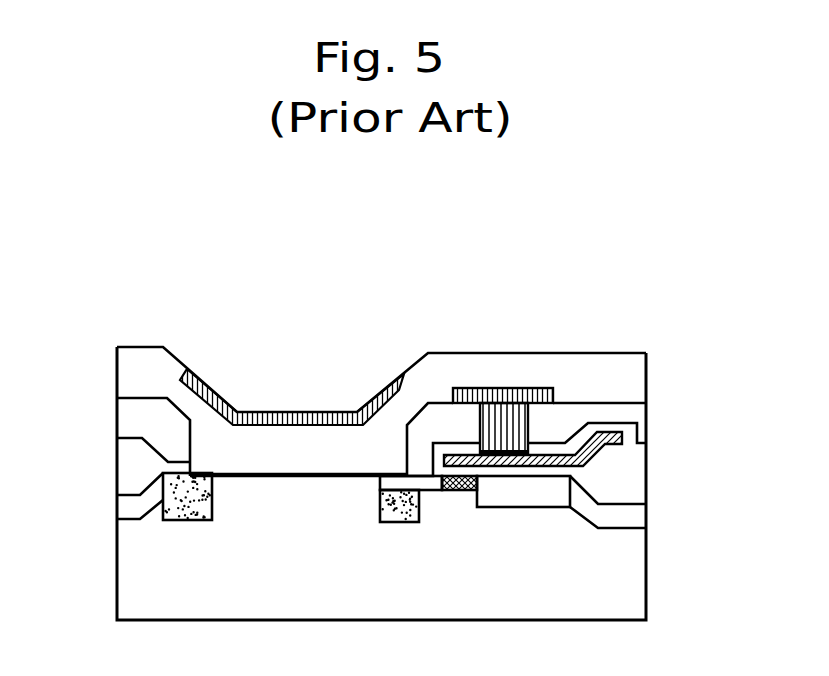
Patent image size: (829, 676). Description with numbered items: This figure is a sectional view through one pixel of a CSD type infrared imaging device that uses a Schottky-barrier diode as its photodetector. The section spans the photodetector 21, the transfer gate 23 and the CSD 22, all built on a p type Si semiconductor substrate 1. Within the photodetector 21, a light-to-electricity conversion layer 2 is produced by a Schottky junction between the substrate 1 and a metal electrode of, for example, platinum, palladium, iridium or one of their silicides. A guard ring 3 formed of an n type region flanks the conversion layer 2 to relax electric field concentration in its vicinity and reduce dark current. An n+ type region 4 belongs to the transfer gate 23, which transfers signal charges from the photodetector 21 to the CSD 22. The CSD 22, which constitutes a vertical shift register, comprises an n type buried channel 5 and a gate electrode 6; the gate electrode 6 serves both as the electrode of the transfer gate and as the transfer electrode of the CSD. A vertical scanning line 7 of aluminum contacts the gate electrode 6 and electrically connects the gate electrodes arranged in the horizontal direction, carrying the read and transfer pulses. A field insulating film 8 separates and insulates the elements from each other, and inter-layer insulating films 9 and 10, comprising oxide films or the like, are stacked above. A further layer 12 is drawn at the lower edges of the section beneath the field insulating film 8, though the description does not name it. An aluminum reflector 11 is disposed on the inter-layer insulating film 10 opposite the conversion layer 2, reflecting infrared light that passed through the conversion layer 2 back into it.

The p type Si semiconductor substrate 1 is at (126, 595).
The light-to-electricity conversion layer 2 is at (277, 470).
The guard ring 3 is at (195, 520).
The n+ type region of the transfer gate 4 is at (417, 483).
The n type buried channel 5 is at (542, 500).
The gate electrode 6 is at (578, 468).
The vertical scanning line 7 is at (498, 382).
The field insulating film 8 is at (127, 468).
The inter-layer insulating film 9 is at (127, 418).
The inter-layer insulating film 10 is at (127, 372).
The aluminum reflector 11 is at (280, 412).
The field oxide layer 12 is at (127, 510).
The photodetector 21 is at (153, 316).
The CSD 22 is at (637, 323).
The transfer gate 23 is at (397, 321).